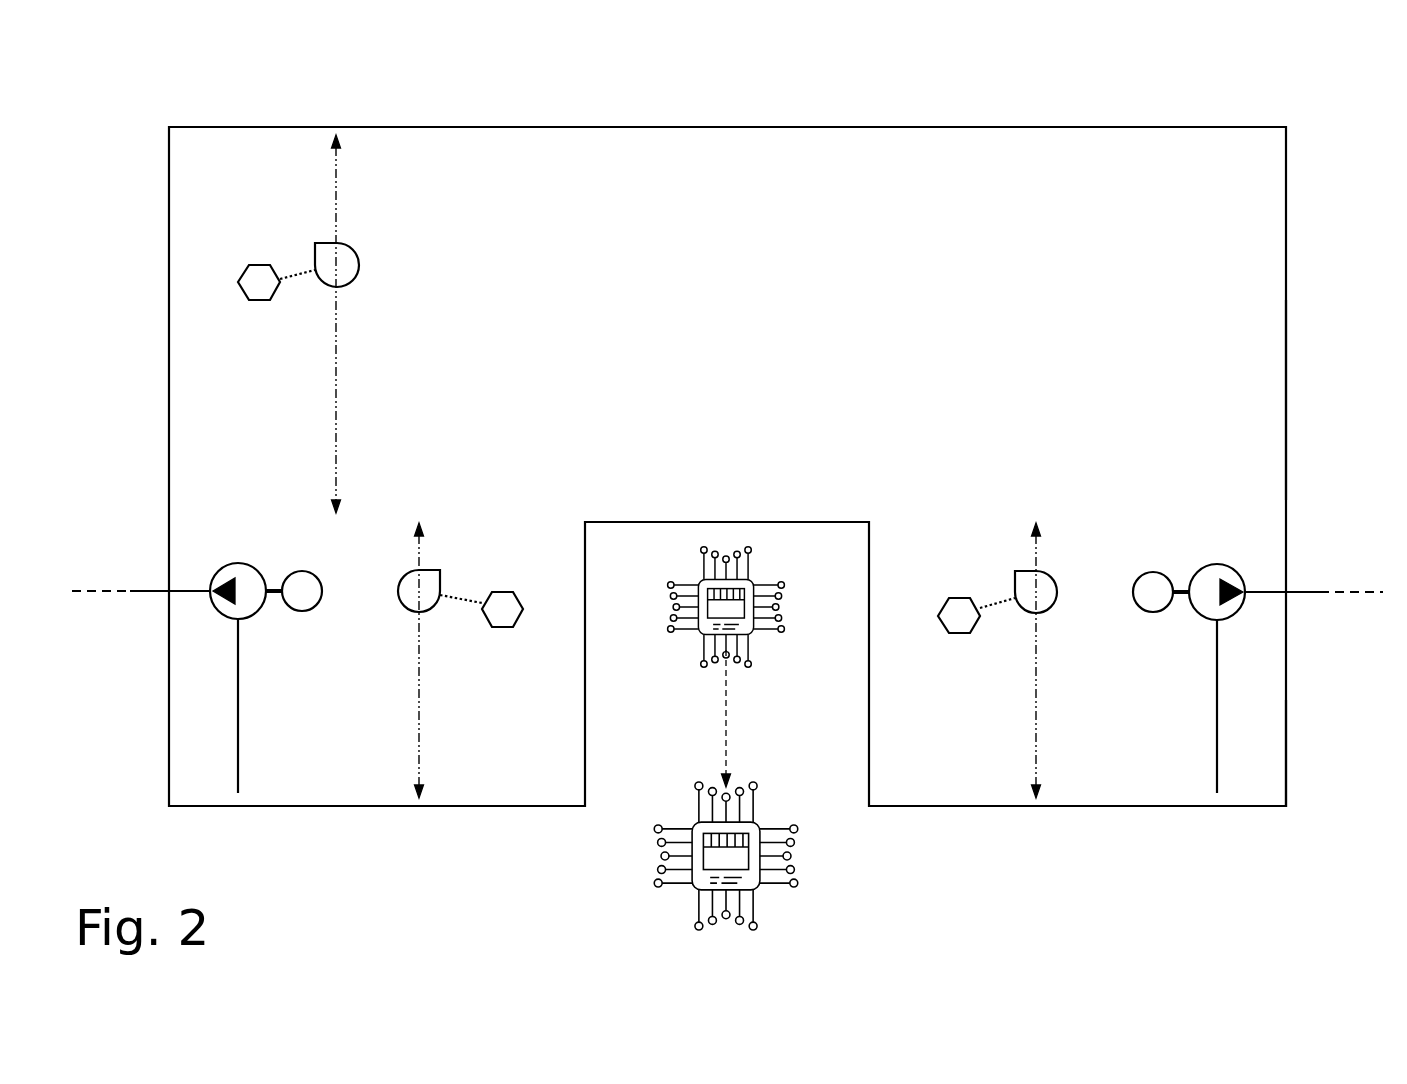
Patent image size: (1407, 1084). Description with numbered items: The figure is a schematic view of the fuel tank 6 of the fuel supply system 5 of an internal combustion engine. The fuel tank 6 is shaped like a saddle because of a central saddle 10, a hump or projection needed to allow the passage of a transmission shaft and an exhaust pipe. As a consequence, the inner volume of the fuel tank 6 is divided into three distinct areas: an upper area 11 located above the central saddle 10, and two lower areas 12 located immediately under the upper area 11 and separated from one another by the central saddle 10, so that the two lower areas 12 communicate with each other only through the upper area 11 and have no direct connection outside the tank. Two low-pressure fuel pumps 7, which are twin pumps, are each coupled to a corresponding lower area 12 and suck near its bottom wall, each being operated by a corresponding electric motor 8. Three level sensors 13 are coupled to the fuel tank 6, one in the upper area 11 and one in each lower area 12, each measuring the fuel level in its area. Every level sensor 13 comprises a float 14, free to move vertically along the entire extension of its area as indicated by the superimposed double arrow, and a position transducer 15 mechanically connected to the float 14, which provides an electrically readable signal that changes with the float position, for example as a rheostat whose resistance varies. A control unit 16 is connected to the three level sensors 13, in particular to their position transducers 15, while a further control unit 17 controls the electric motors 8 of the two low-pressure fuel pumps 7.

The fuel supply system 5 is at (1318, 875).
The fuel tank 6 is at (1330, 104).
The low-pressure fuel pump 7 is at (216, 608).
The electric motor 8 is at (298, 571).
The central saddle 10 is at (715, 482).
The upper area 11 is at (1336, 264).
The lower area 12 is at (382, 860).
The level sensor 13 is at (284, 218).
The float 14 is at (359, 264).
The position transducer 15 is at (259, 287).
The control unit 16 is at (726, 606).
The control unit 17 is at (737, 856).